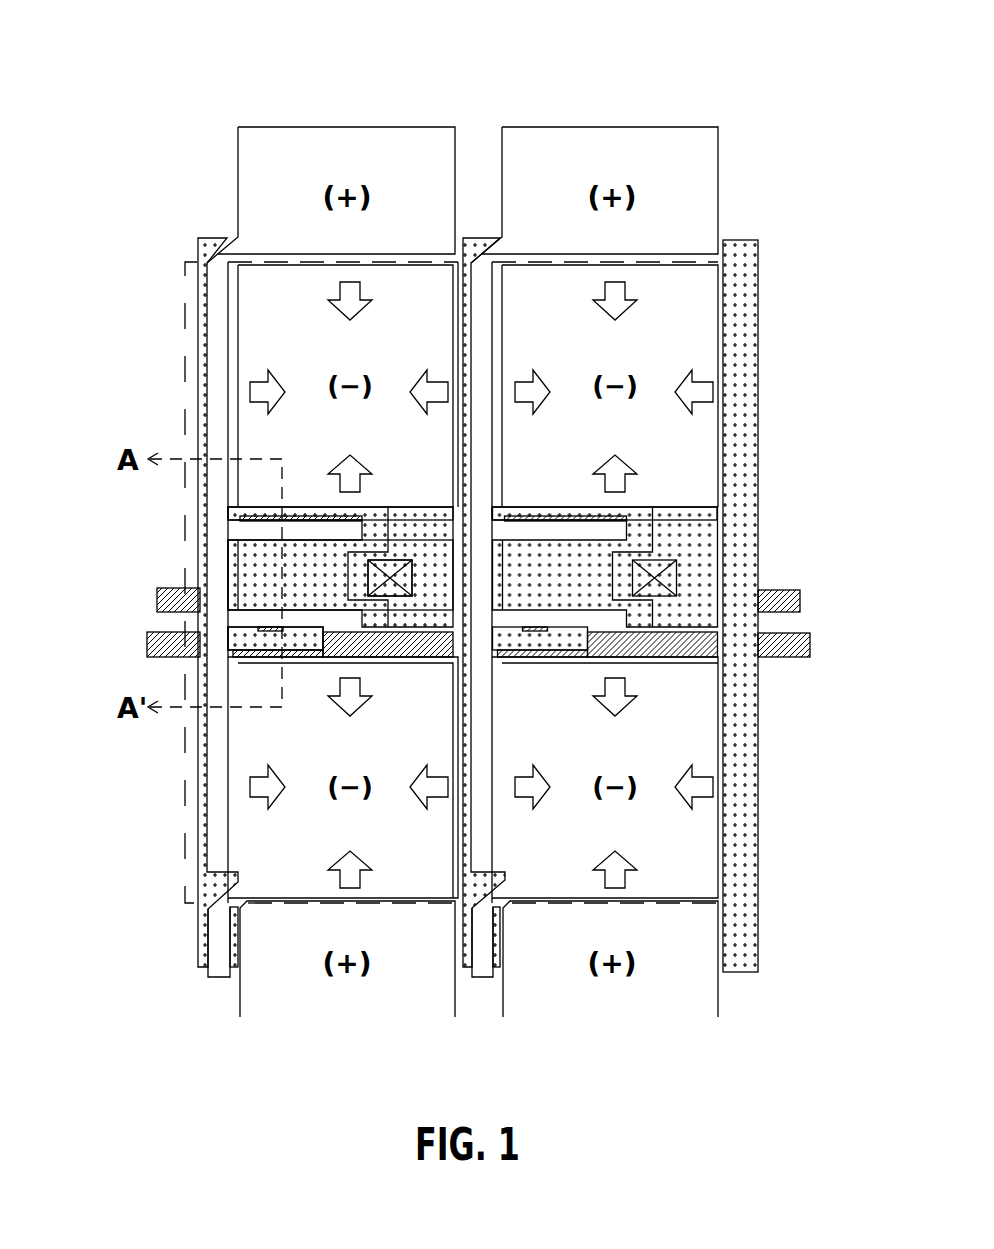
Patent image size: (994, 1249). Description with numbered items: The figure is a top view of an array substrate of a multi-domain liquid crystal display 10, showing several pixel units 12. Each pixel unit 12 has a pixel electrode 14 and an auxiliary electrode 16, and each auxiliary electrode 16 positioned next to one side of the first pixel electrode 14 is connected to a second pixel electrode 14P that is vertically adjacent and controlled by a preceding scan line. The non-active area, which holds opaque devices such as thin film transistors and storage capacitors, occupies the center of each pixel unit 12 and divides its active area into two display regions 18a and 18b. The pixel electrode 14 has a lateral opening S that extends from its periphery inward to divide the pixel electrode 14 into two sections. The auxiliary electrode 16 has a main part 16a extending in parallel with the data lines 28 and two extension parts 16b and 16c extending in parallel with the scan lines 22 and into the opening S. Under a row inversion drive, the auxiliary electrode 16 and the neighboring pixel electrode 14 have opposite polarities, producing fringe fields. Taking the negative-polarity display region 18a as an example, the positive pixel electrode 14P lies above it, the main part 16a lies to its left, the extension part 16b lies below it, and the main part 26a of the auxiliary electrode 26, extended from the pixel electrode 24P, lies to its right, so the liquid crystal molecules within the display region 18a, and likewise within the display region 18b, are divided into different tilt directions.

The multi-domain liquid crystal display 10 is at (828, 41).
The pixel unit 12 is at (185, 259).
The pixel electrode 14 is at (236, 390).
The second pixel electrode 14P is at (297, 127).
The auxiliary electrode 16 is at (242, 591).
The main part 16a is at (215, 552).
The extension part 16b is at (313, 532).
The extension part 16c is at (307, 618).
The display region 18a is at (258, 345).
The display region 18b is at (258, 837).
The scan line 22 is at (813, 633).
The pixel electrode 24P is at (500, 127).
The auxiliary electrode 26 is at (600, 540).
The main part 26a is at (483, 484).
The data line 28 is at (738, 240).
The lateral opening S is at (325, 585).